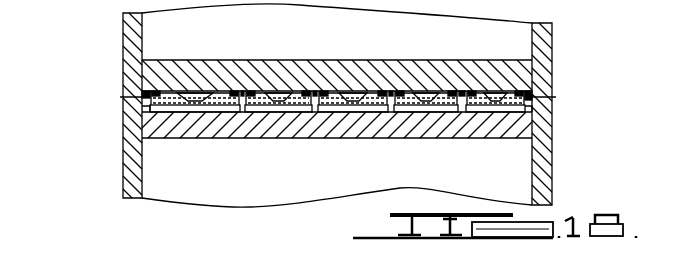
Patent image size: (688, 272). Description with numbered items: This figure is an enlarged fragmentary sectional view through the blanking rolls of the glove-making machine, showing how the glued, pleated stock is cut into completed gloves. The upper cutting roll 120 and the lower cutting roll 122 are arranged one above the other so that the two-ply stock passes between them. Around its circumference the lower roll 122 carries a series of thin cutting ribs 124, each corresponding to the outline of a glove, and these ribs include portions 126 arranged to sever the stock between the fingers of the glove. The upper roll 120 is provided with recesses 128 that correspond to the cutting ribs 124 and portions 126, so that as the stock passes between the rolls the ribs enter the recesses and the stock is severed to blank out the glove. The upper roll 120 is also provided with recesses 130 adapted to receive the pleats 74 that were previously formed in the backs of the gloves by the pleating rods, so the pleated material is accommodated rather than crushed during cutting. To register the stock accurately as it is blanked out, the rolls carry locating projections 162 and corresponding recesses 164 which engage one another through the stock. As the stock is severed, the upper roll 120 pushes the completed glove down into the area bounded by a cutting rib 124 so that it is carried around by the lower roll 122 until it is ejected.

The pleats 74 is at (200, 91).
The upper cutting roll 120 is at (555, 65).
The lower cutting roll 122 is at (553, 173).
The cutting ribs 124 is at (165, 110).
The portions of the cutting ribs 126 is at (305, 108).
The recesses 128 is at (240, 93).
The recesses 130 is at (172, 90).
The locating projections 162 is at (120, 105).
The locating recesses 164 is at (120, 113).